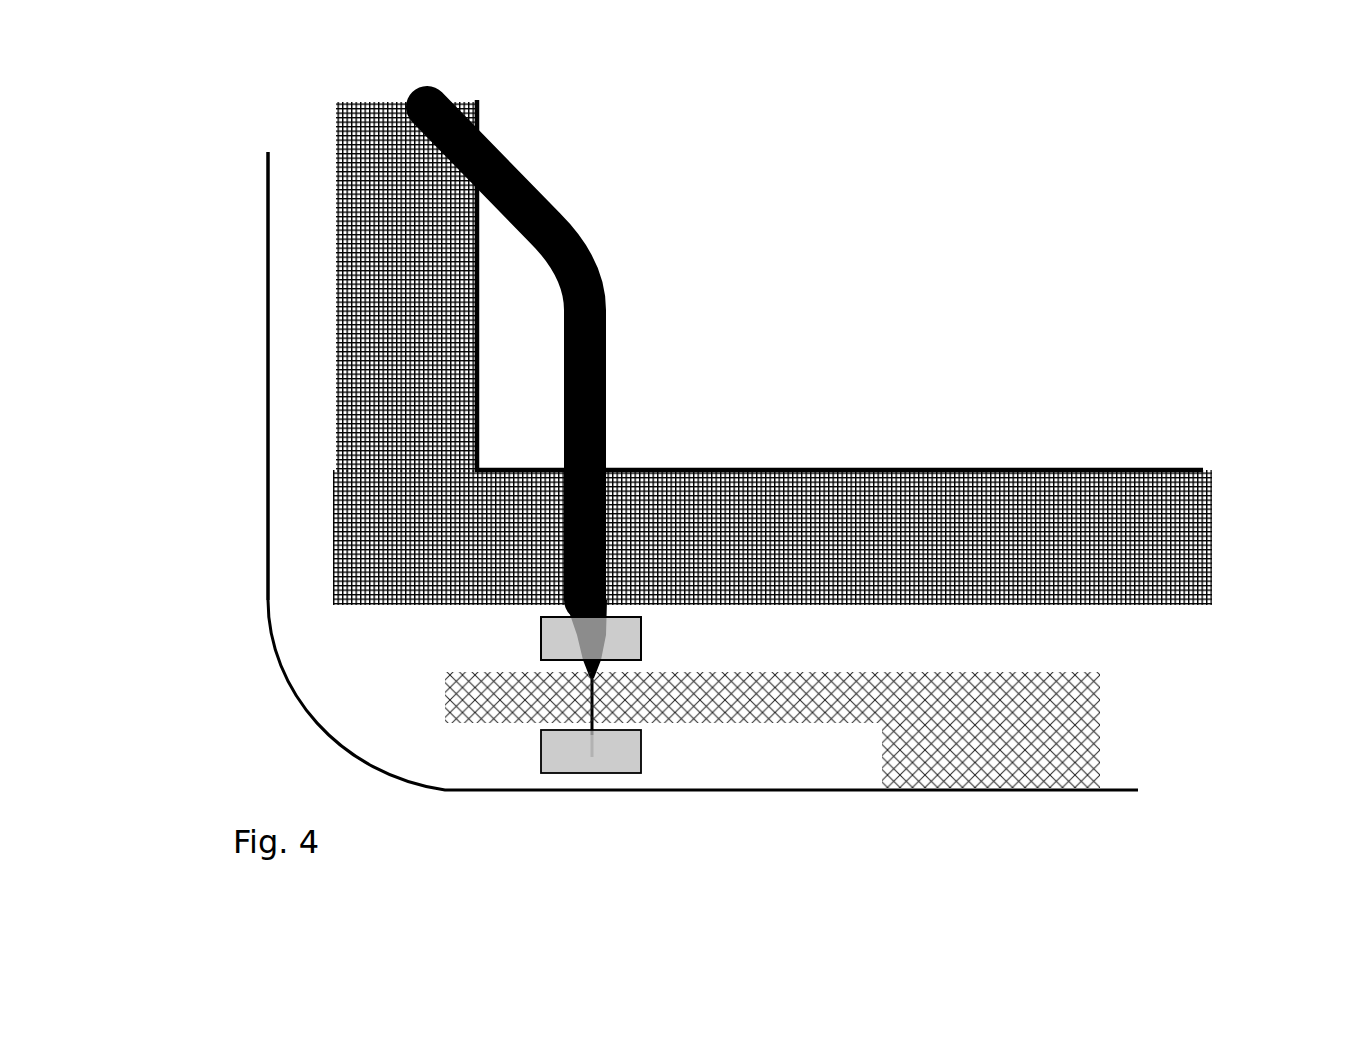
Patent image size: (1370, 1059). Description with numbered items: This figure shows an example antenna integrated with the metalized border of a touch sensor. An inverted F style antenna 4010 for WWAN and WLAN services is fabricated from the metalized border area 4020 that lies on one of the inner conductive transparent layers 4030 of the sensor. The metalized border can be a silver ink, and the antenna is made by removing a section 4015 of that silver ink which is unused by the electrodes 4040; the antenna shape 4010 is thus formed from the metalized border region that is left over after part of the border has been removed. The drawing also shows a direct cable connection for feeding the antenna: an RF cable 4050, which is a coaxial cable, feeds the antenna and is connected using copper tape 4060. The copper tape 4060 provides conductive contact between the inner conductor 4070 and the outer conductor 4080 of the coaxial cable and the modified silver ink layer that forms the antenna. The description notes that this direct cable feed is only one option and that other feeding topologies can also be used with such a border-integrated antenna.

The inverted "F" style antenna 4010 is at (417, 757).
The removed section 4015 is at (973, 725).
The metalized border area 4020 is at (472, 82).
The inner conductive transparent layer 4030 is at (840, 285).
The electrodes 4040 is at (337, 377).
The RF cable 4050 is at (605, 292).
The copper tape 4060 is at (541, 755).
The inner conductor 4070 is at (595, 708).
The outer conductor 4080 is at (590, 640).